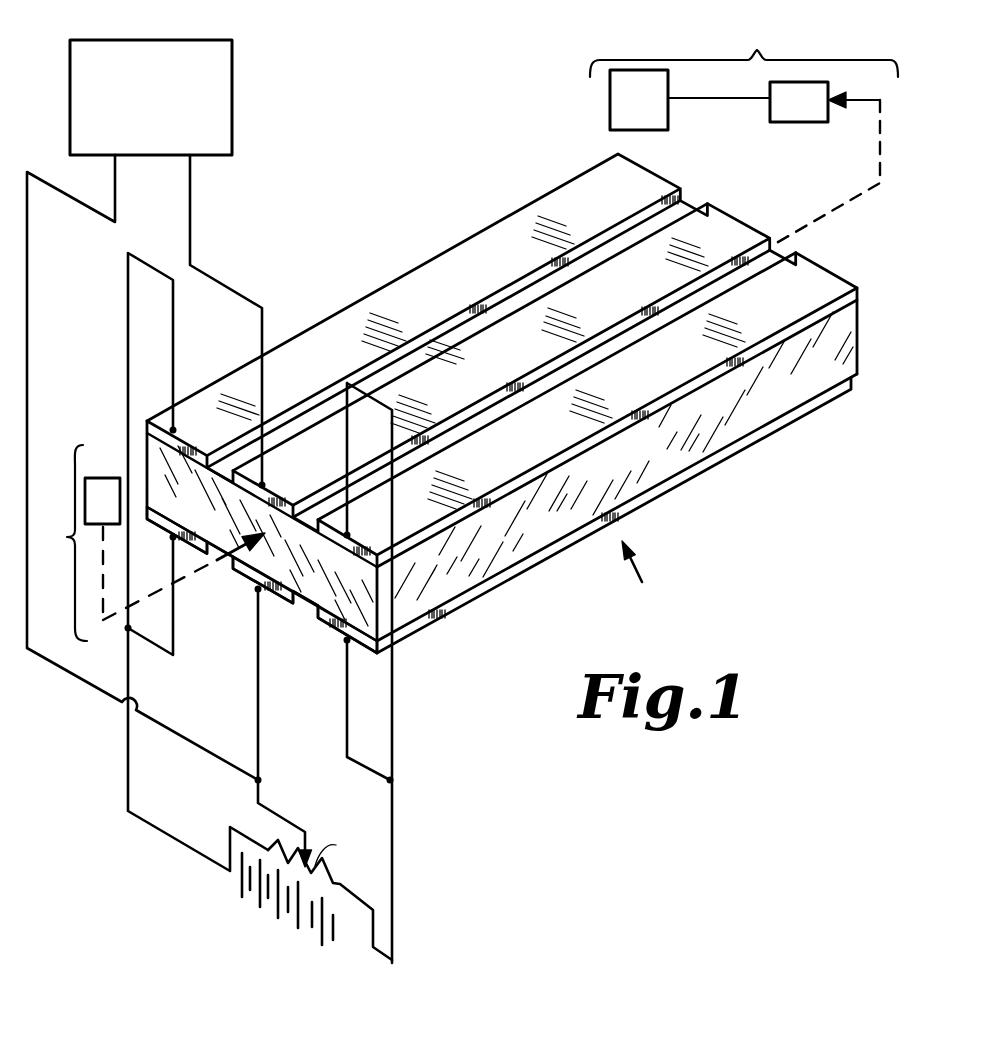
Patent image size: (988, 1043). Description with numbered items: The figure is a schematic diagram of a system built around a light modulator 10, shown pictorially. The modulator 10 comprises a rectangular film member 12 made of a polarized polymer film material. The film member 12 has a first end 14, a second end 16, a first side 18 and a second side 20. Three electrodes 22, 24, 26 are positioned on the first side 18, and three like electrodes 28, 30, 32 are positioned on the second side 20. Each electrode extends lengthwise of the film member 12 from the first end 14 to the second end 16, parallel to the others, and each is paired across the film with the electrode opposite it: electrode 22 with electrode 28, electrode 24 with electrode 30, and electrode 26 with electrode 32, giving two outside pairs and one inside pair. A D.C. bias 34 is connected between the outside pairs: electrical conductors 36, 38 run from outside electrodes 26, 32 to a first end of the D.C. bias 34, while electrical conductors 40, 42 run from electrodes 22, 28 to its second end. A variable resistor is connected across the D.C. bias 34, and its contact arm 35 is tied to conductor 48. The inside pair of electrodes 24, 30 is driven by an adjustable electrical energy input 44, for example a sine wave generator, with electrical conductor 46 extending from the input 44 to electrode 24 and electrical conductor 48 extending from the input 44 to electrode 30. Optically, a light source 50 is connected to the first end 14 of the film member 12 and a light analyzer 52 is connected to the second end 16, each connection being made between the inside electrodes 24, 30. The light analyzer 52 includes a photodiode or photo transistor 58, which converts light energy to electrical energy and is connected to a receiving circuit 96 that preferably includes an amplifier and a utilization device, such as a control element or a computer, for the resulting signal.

The modulator 10 is at (641, 595).
The film member 12 is at (513, 537).
The first end 14 is at (358, 612).
The second end 16 is at (860, 322).
The first side 18 is at (450, 342).
The second side 20 is at (313, 606).
The electrode 22 is at (481, 252).
The electrode 24 is at (632, 266).
The electrode 26 is at (590, 388).
The electrode 28 is at (160, 522).
The electrode 30 is at (250, 580).
The electrode 32 is at (368, 650).
The D.C. bias 34 is at (249, 931).
The contact arm 35 is at (284, 814).
The electrical conductor 36 is at (346, 450).
The electrical conductor 38 is at (347, 728).
The electrical conductor 40 is at (173, 343).
The electrical conductor 42 is at (175, 640).
The adjustable electrical energy input 44 is at (233, 85).
The electrical conductor 46 is at (218, 280).
The electrical conductor 48 is at (182, 742).
The light source 50 is at (147, 543).
The light analyzer 52 is at (744, 44).
The photodiode or photo transistor 58 is at (788, 100).
The receiving circuit 96 is at (612, 90).